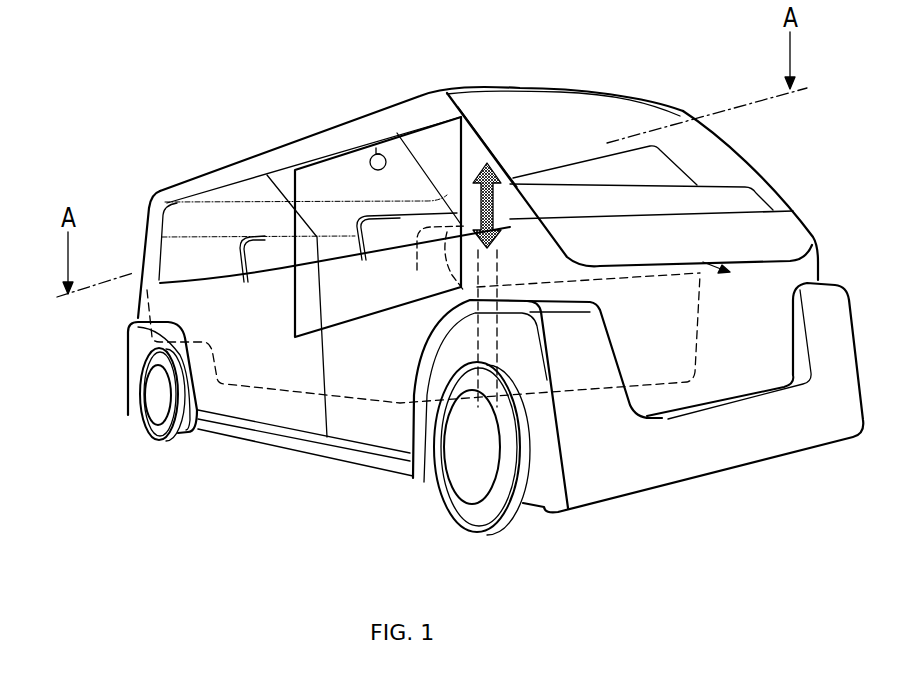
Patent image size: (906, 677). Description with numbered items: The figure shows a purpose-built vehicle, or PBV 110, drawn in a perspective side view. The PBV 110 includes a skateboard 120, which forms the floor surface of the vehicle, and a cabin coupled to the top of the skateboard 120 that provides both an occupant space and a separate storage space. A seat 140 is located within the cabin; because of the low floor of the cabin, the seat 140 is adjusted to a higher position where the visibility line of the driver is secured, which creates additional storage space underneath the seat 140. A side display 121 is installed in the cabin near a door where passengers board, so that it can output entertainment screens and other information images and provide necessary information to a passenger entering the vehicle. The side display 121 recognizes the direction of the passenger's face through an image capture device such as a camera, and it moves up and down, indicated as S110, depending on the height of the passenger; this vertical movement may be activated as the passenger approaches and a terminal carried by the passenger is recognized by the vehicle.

The purpose-built vehicle (PBV) 110 is at (301, 118).
The skateboard 120 is at (299, 377).
The side display 121 is at (422, 128).
The seat 140 is at (253, 236).
The vertical movement of the side display S110 is at (515, 285).